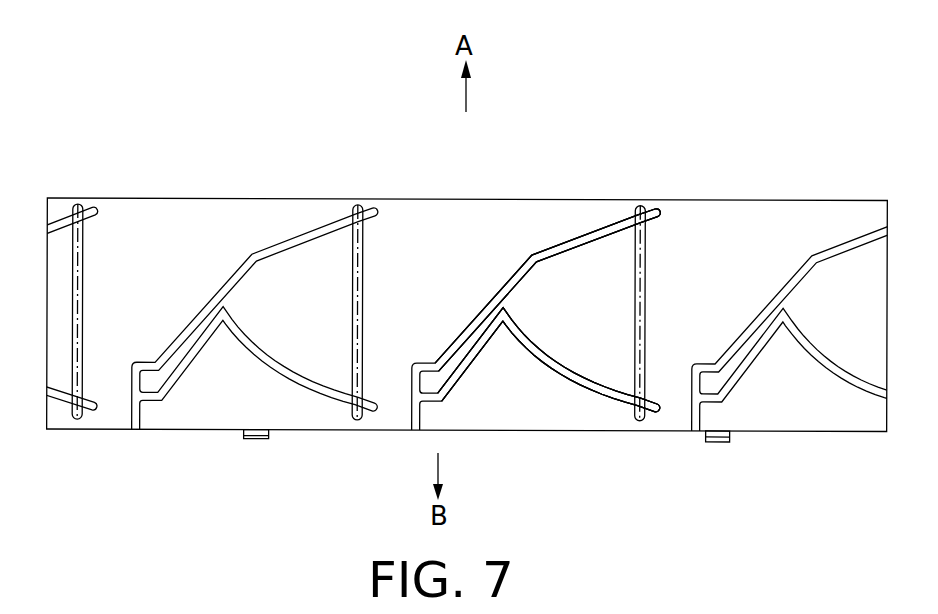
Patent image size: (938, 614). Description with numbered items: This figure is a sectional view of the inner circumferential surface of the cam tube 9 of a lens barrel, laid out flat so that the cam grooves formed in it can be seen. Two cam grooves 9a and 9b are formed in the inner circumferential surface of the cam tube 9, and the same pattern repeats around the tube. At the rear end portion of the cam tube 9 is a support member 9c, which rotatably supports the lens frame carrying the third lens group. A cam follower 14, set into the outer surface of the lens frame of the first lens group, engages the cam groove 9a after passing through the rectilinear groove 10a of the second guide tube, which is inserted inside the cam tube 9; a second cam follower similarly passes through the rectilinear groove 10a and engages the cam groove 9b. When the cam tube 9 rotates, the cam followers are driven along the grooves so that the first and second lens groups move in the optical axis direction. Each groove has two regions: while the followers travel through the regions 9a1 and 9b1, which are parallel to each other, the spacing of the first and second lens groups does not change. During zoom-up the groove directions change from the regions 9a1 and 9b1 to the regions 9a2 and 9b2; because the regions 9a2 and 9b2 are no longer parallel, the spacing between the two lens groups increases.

The cam tube 9 is at (416, 215).
The cam groove 9a is at (524, 254).
The region of cam groove 9a 9a1 is at (452, 333).
The region of cam groove 9a 9a2 is at (577, 246).
The cam groove 9b is at (549, 345).
The region of cam groove 9b 9b1 is at (463, 370).
The region of cam groove 9b 9b2 is at (567, 377).
The support member 9c is at (718, 441).
The cam follower 14 is at (636, 217).
The rectilinear groove 10a is at (645, 293).